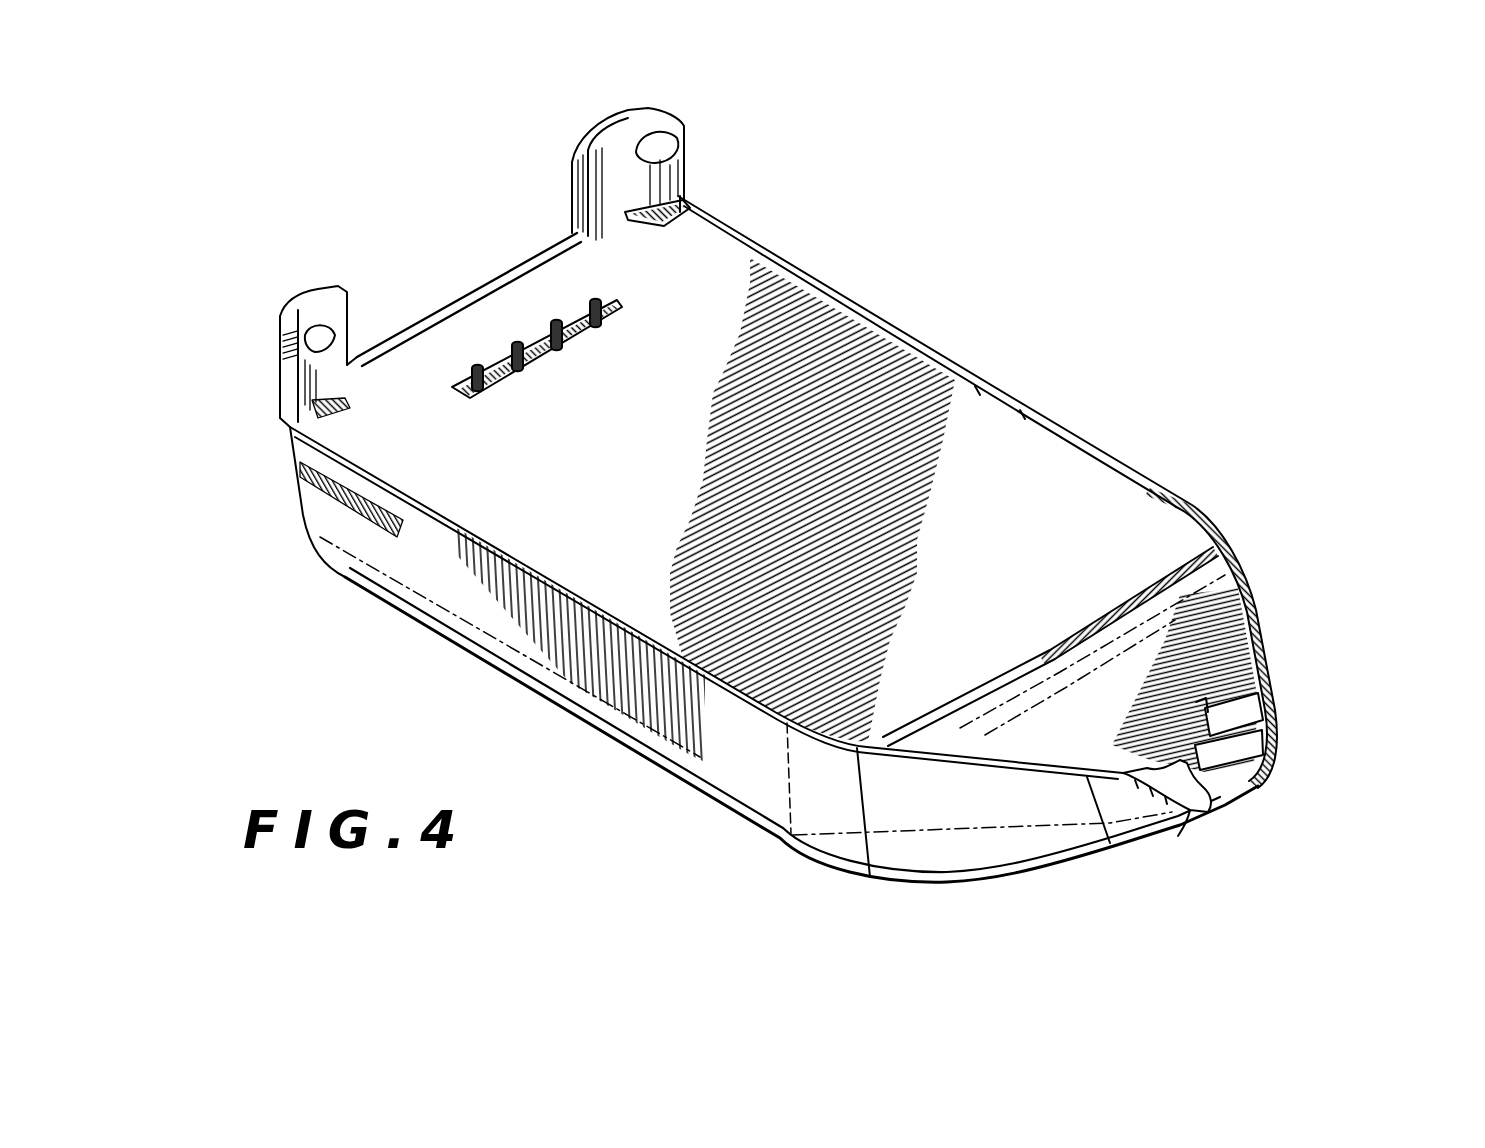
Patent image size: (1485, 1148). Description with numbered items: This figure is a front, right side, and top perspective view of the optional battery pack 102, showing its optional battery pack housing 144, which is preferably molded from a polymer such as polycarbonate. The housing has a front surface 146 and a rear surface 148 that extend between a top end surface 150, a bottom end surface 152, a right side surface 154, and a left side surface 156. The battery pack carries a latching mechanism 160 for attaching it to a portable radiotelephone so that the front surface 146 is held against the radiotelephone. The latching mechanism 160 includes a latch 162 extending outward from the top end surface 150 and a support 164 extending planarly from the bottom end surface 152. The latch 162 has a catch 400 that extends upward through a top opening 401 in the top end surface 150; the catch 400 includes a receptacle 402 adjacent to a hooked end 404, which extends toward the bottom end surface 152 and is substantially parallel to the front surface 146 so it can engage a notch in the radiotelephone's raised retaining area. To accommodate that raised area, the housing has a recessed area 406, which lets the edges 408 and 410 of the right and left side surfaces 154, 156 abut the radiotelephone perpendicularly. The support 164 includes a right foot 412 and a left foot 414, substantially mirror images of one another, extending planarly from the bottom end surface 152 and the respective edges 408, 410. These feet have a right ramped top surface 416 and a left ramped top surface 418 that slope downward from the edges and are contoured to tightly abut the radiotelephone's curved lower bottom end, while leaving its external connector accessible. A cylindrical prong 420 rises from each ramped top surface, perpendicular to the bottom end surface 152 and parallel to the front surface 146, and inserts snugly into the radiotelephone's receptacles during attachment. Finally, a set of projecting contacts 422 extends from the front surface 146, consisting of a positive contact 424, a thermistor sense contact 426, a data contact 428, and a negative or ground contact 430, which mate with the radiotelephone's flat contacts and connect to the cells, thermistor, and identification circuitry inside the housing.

The optional battery pack 102 is at (1223, 498).
The optional battery pack housing 144 is at (805, 860).
The front surface 146 is at (957, 410).
The rear surface 148 is at (620, 745).
The top end surface 150 is at (1232, 805).
The bottom end surface 152 is at (450, 307).
The right side surface 154 is at (557, 647).
The left side surface 156 is at (780, 250).
The latching mechanism 160 is at (368, 168).
The latch 162 is at (1260, 818).
The support 164 is at (610, 100).
The catch 400 is at (1288, 792).
The top opening 401 is at (1178, 836).
The receptacle 402 is at (1235, 775).
The hooked end 404 is at (1243, 735).
The recessed area 406 is at (1173, 627).
The edge of right side surface 408 is at (647, 633).
The edge of left side surface 410 is at (1027, 410).
The right foot 412 is at (280, 393).
The left foot 414 is at (650, 117).
The right ramped top surface 416 is at (340, 343).
The left ramped top surface 418 is at (613, 170).
The cylindrical prong 420 is at (667, 147).
The set of projecting contacts 422 is at (585, 362).
The positive contact 424 is at (595, 300).
The thermistor sense contact 426 is at (556, 321).
The data contact 428 is at (517, 343).
The negative or ground contact 430 is at (476, 366).